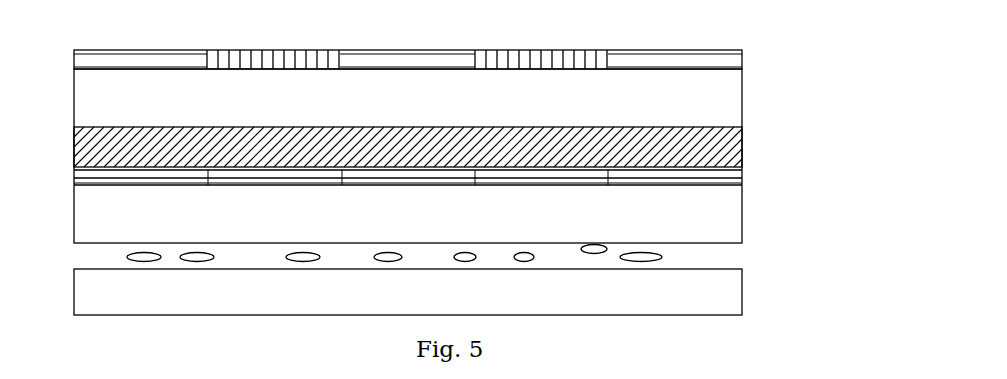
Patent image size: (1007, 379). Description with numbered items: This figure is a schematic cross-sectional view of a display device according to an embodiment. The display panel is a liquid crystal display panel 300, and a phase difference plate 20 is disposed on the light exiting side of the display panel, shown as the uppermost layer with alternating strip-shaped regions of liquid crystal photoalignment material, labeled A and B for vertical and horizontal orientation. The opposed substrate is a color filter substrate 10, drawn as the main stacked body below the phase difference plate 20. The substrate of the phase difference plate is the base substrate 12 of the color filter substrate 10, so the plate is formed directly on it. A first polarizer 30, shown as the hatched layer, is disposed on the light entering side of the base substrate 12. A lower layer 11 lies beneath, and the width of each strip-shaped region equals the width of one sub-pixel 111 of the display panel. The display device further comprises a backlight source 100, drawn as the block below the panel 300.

The color filter substrate 10 is at (73, 243).
The phase difference plate 20 is at (744, 63).
The base substrate 12 is at (744, 113).
The first polarizer 30 is at (744, 148).
The lower substrate 11 is at (744, 175).
The sub-pixel 111 is at (722, 183).
The backlight module 100 is at (742, 283).
The liquid crystal display panel 300 is at (808, 317).